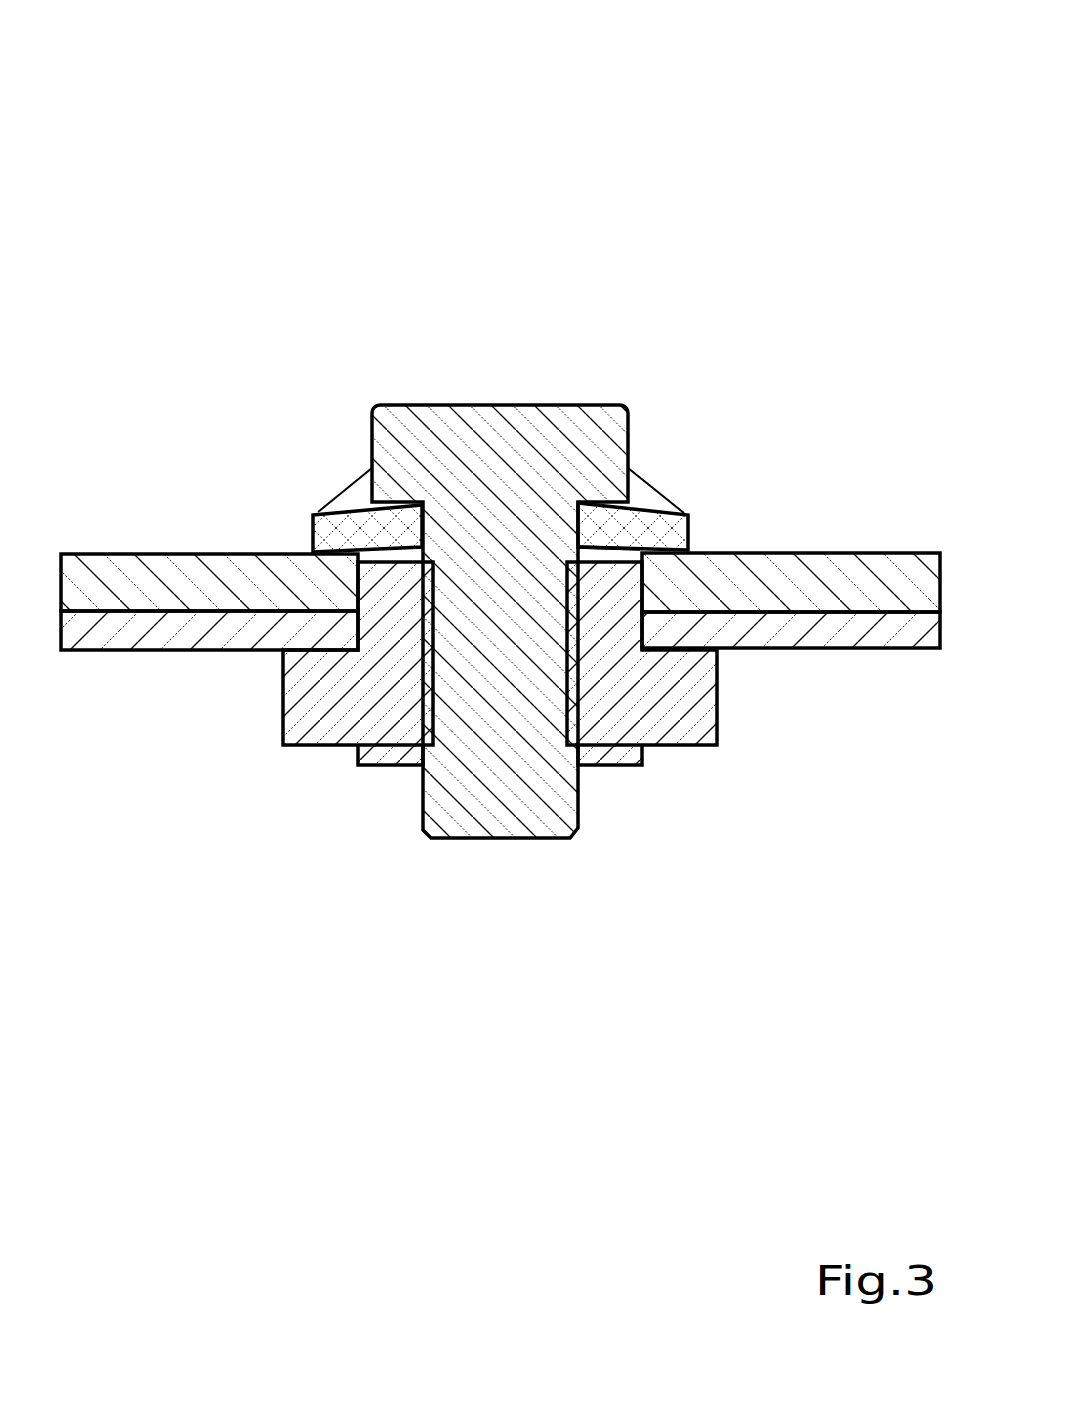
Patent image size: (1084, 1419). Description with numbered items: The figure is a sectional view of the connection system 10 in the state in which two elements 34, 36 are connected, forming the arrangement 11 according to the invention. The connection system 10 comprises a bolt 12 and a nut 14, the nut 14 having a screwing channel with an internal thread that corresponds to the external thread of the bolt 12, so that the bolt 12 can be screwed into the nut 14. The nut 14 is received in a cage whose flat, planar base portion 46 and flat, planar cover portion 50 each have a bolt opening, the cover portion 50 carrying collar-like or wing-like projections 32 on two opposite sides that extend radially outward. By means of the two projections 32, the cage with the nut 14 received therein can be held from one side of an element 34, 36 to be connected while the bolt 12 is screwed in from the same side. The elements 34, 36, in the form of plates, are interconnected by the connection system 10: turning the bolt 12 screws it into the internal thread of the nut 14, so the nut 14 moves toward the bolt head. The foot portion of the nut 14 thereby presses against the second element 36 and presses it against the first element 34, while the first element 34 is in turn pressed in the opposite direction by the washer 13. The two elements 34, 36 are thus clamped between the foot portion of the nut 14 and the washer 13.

The connection system 10 is at (661, 310).
The arrangement 11 is at (704, 126).
The bolt 12 is at (455, 443).
The washer 13 is at (360, 527).
The nut 14 is at (360, 700).
The projections 32 is at (642, 498).
The first element 34 is at (138, 570).
The second element 36 is at (263, 637).
The base portion 46 is at (612, 755).
The cover portion 50 is at (598, 553).